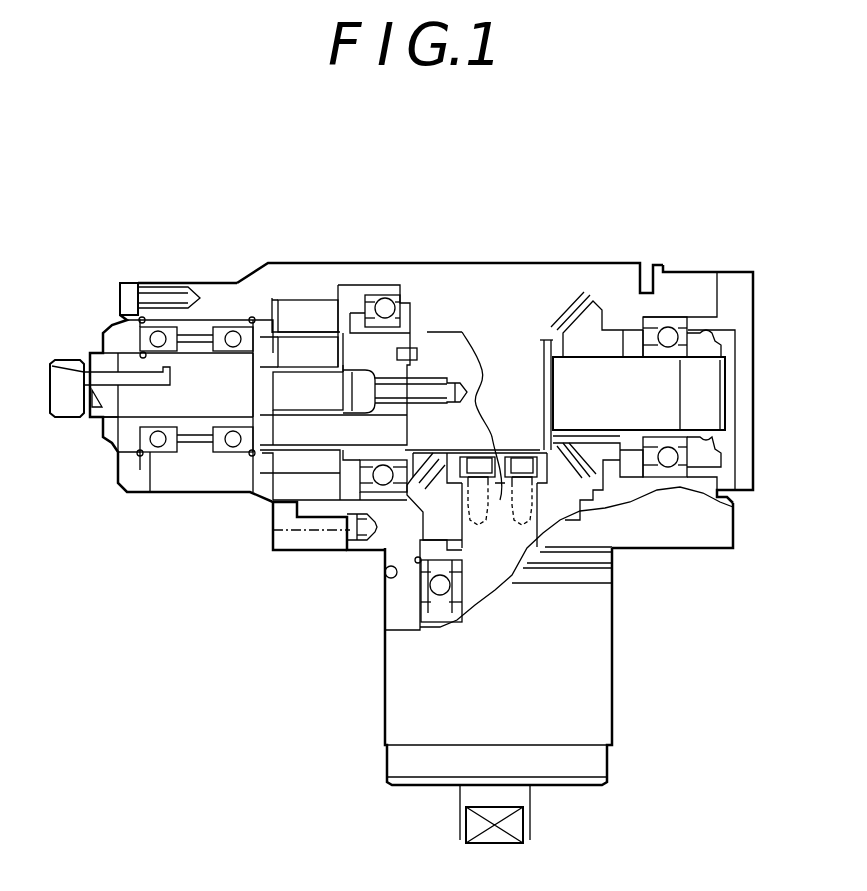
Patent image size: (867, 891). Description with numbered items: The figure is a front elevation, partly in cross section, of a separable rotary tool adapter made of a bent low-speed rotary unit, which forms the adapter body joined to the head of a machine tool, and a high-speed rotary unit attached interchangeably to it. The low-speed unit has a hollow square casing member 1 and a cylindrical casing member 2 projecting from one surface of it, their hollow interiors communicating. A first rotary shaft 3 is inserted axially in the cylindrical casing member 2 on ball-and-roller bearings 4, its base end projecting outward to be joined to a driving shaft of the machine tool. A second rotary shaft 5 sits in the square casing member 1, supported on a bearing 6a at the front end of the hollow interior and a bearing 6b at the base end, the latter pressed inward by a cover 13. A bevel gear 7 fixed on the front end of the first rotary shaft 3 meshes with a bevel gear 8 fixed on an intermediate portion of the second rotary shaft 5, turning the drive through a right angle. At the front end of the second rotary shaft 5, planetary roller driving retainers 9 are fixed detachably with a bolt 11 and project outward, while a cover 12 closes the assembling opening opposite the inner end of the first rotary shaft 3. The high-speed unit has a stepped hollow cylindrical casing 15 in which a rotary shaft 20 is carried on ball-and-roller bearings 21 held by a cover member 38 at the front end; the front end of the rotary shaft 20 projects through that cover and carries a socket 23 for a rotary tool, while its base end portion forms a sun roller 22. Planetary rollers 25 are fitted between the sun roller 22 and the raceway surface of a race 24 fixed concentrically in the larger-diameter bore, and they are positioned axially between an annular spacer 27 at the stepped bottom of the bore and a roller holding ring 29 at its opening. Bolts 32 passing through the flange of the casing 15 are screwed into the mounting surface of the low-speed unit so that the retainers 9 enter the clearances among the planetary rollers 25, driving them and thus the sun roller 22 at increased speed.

The square casing member 1 is at (647, 523).
The cylindrical casing member 2 is at (585, 718).
The first rotary shaft 3 is at (490, 583).
The ball-and-roller bearings 4 is at (440, 585).
The second rotary shaft 5 is at (512, 353).
The bearing 6a is at (386, 306).
The bearing 6b is at (670, 335).
The bevel gear 7 is at (438, 483).
The bevel gear 8 is at (591, 327).
The planetary roller driving retainers 9 is at (270, 477).
The bolt 11 is at (428, 392).
The cover 12 is at (563, 268).
The cover 13 is at (732, 292).
The casing 15 is at (220, 300).
The rotary shaft 20 is at (205, 402).
The ball-and-roller bearings 21 is at (231, 337).
The sun roller 22 is at (270, 457).
The socket 23 is at (78, 366).
The race 24 is at (298, 303).
The planetary rollers 25 is at (323, 328).
The annular spacer 27 is at (272, 298).
The roller holding ring 29 is at (347, 302).
The bolts 32 is at (316, 528).
The cover member 38 is at (133, 475).